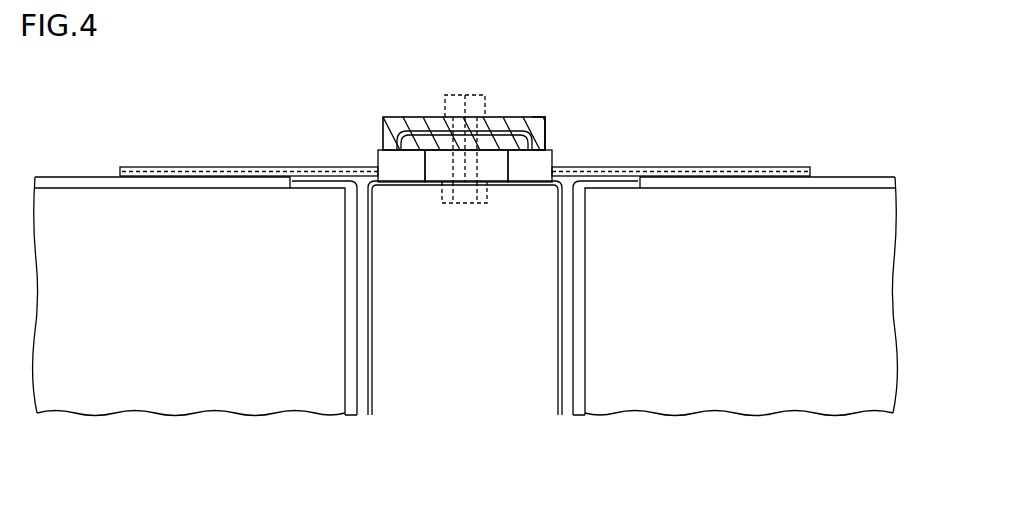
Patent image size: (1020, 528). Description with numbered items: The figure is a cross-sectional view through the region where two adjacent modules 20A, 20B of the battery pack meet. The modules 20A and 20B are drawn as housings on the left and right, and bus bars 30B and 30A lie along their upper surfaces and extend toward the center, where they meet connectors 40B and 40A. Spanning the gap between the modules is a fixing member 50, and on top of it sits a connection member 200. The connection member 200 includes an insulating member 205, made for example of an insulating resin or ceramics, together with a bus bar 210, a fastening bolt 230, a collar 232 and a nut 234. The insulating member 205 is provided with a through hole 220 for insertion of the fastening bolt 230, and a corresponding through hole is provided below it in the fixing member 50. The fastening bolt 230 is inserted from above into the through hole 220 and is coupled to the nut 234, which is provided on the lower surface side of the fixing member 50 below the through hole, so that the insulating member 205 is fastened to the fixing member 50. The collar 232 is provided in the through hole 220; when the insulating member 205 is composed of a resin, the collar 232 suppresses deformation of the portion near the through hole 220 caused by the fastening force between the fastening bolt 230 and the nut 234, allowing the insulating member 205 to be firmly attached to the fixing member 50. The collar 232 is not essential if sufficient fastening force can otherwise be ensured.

The connection member 200 is at (521, 83).
The insulating member 205 is at (528, 129).
The bus bar 210 is at (388, 128).
The through hole 220 is at (463, 145).
The fastening bolt 230 is at (456, 103).
The collar 232 is at (443, 127).
The nut 234 is at (486, 196).
The connector 40A is at (526, 168).
The connector 40B is at (403, 170).
The bus bar 30A is at (661, 166).
The bus bar 30B is at (242, 166).
The module 20A is at (730, 386).
The module 20B is at (188, 386).
The fixing member 50 is at (373, 386).